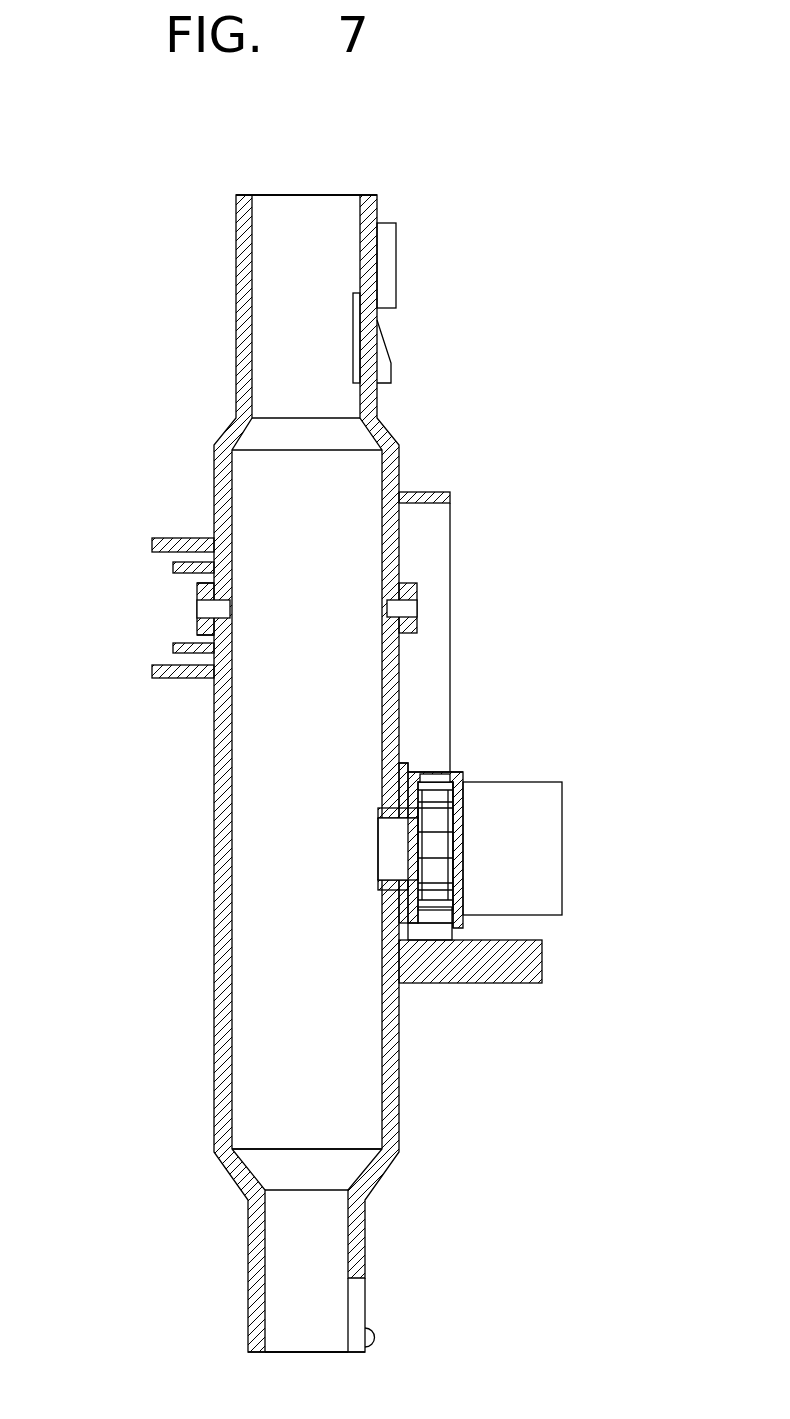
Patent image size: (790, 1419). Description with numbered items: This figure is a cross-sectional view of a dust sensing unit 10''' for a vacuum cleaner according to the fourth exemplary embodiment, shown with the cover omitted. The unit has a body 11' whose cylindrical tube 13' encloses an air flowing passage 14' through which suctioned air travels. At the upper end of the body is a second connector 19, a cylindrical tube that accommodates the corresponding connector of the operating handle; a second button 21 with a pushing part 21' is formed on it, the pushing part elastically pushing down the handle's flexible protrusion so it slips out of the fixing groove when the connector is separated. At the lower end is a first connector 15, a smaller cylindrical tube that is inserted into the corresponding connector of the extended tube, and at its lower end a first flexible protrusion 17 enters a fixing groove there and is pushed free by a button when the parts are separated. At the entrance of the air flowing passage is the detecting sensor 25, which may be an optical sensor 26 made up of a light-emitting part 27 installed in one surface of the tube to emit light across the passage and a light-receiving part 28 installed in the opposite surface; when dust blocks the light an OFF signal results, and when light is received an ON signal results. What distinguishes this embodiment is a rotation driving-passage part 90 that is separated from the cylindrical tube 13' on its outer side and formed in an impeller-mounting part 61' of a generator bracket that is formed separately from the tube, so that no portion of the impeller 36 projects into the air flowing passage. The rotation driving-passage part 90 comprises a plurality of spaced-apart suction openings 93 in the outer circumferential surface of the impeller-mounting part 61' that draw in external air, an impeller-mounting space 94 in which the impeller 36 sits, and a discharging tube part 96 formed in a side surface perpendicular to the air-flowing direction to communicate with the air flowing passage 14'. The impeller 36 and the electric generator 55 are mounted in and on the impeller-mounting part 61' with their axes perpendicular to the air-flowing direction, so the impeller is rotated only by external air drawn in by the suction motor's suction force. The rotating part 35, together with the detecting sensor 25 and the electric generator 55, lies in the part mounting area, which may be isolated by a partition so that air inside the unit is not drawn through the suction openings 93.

The dust sensing unit 10''' is at (213, 750).
The body 11' is at (252, 773).
The second connector 19 is at (240, 268).
The pushing part 21' is at (410, 324).
The second button 21 is at (434, 303).
The detecting sensor 25 is at (154, 590).
The optical sensor 26 is at (78, 627).
The light-receiving part 28 is at (197, 602).
The light-emitting part 27 is at (387, 603).
The cylindrical tube 13' is at (291, 747).
The air flowing passage 14' is at (267, 1125).
The first connector 15 is at (248, 1300).
The first flexible protrusion 17 is at (373, 1330).
The impeller-mounting part 61' is at (460, 903).
The rotation driving-passage part 90 is at (565, 695).
The rotating part 35 is at (443, 857).
The suction openings 93 is at (438, 777).
The impeller-mounting space 94 is at (465, 808).
The discharging tube part 96 is at (370, 818).
The impeller 36 is at (422, 932).
The electric generator 55 is at (553, 900).